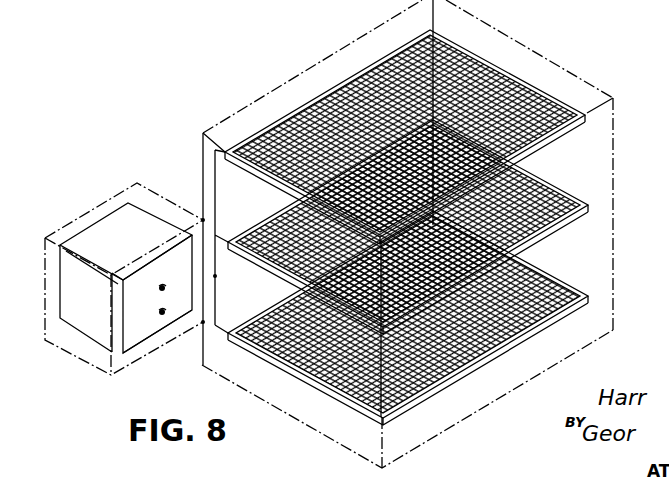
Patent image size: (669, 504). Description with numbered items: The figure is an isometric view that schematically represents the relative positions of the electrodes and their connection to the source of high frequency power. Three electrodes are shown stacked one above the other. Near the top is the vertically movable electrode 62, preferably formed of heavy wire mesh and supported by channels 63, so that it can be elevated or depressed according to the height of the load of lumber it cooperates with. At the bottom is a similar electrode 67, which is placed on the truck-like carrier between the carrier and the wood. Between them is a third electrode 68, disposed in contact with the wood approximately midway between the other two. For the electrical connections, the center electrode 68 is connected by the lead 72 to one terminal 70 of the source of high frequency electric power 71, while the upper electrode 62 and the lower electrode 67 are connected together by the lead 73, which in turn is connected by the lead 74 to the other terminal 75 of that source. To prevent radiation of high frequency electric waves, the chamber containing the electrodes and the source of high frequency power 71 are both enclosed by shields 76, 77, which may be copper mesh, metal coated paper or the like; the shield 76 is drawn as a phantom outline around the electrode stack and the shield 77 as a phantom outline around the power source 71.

The vertically movable electrode 62 is at (543, 105).
The channels 63 is at (533, 75).
The electrode 67 is at (557, 283).
The third electrode 68 is at (552, 192).
The terminal 70 is at (160, 289).
The source of high frequency electric power 71 is at (100, 332).
The lead 72 is at (178, 273).
The lead 73 is at (216, 277).
The lead 74 is at (183, 312).
The terminal 75 is at (160, 314).
The shield 76 is at (615, 210).
The shield 77 is at (140, 193).